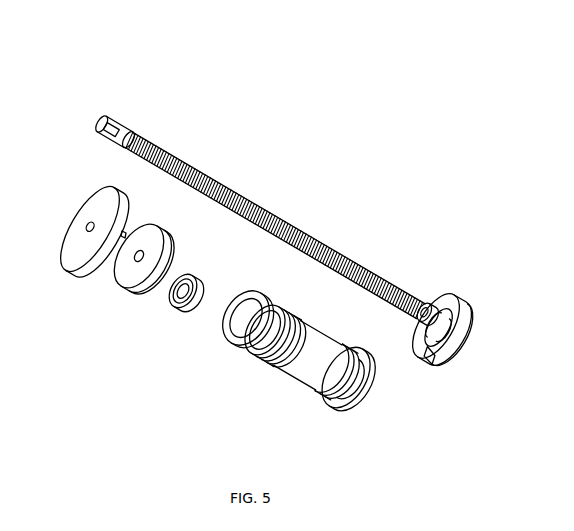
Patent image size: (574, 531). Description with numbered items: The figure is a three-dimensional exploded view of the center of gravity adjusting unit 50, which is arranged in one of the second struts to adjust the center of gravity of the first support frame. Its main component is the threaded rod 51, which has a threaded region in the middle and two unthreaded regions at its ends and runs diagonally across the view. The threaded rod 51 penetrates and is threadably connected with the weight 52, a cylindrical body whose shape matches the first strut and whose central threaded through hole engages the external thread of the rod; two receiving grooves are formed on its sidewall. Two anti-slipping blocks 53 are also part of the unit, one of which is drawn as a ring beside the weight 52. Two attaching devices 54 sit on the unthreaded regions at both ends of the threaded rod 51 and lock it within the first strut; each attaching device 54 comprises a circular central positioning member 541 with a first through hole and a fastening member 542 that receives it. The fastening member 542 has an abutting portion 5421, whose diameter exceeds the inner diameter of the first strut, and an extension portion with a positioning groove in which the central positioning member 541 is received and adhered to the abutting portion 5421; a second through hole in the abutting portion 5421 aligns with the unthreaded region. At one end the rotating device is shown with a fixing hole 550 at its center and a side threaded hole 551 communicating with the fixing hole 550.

The CG adjusting unit 50 is at (215, 38).
The threaded rod 51 is at (296, 212).
The weight 52 is at (249, 364).
The anti-slipping block 53 is at (225, 332).
The attaching device 54 is at (290, 292).
The central positioning member 541 is at (328, 303).
The fastening member 542 is at (146, 277).
The abutting portion 5421 is at (466, 345).
The fixing hole 550 is at (87, 225).
The side threaded hole 551 is at (124, 233).